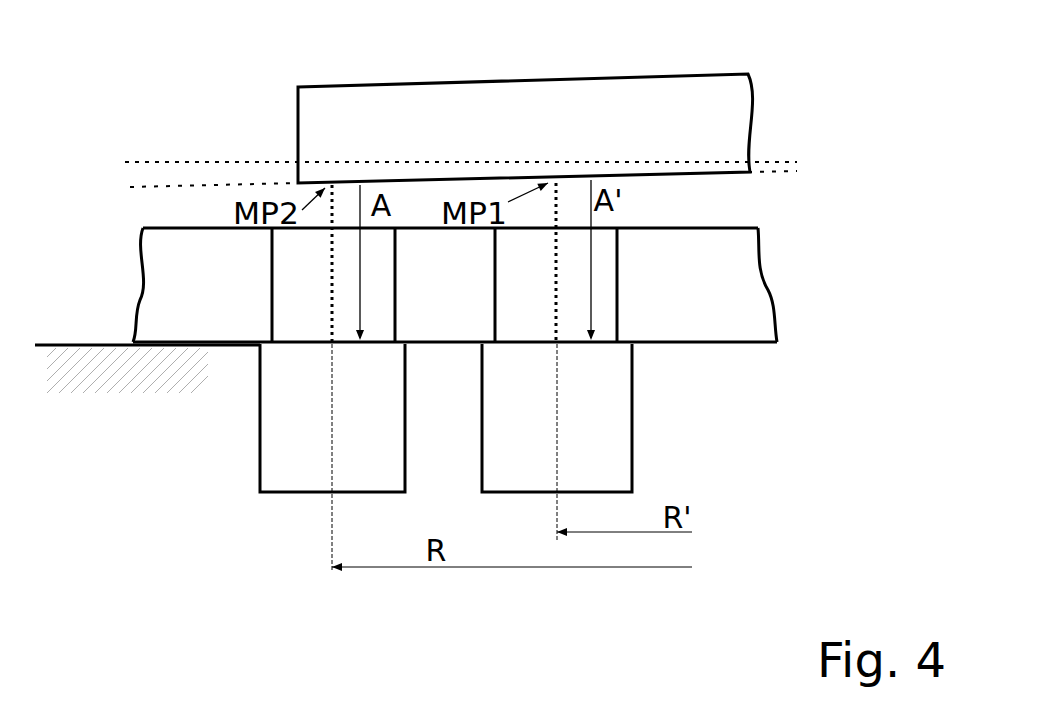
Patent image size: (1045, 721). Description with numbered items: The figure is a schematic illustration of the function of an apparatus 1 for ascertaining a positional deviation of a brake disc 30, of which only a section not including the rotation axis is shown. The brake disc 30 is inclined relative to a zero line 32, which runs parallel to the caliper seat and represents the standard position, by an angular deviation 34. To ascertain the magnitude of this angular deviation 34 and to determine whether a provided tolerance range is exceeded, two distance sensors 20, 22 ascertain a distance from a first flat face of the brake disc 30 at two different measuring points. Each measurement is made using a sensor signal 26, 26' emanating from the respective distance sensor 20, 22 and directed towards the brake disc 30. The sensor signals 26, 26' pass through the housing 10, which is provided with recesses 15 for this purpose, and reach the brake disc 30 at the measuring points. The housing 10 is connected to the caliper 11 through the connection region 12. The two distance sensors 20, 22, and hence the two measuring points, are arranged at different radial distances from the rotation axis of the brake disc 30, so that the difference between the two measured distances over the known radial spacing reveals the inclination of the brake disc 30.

The apparatus 1 is at (365, 70).
The brake disc 30 is at (698, 103).
The zero line 32 is at (210, 163).
The angular deviation 34 is at (182, 187).
The connection region 12 is at (160, 297).
The sensor signal 26' is at (796, 285).
The caliper 11 is at (108, 389).
The housing 10 is at (707, 333).
The distance sensor 20 is at (271, 387).
The distance sensor 22 is at (494, 387).
The sensor signal 26 is at (444, 299).
The recess 15 is at (600, 318).